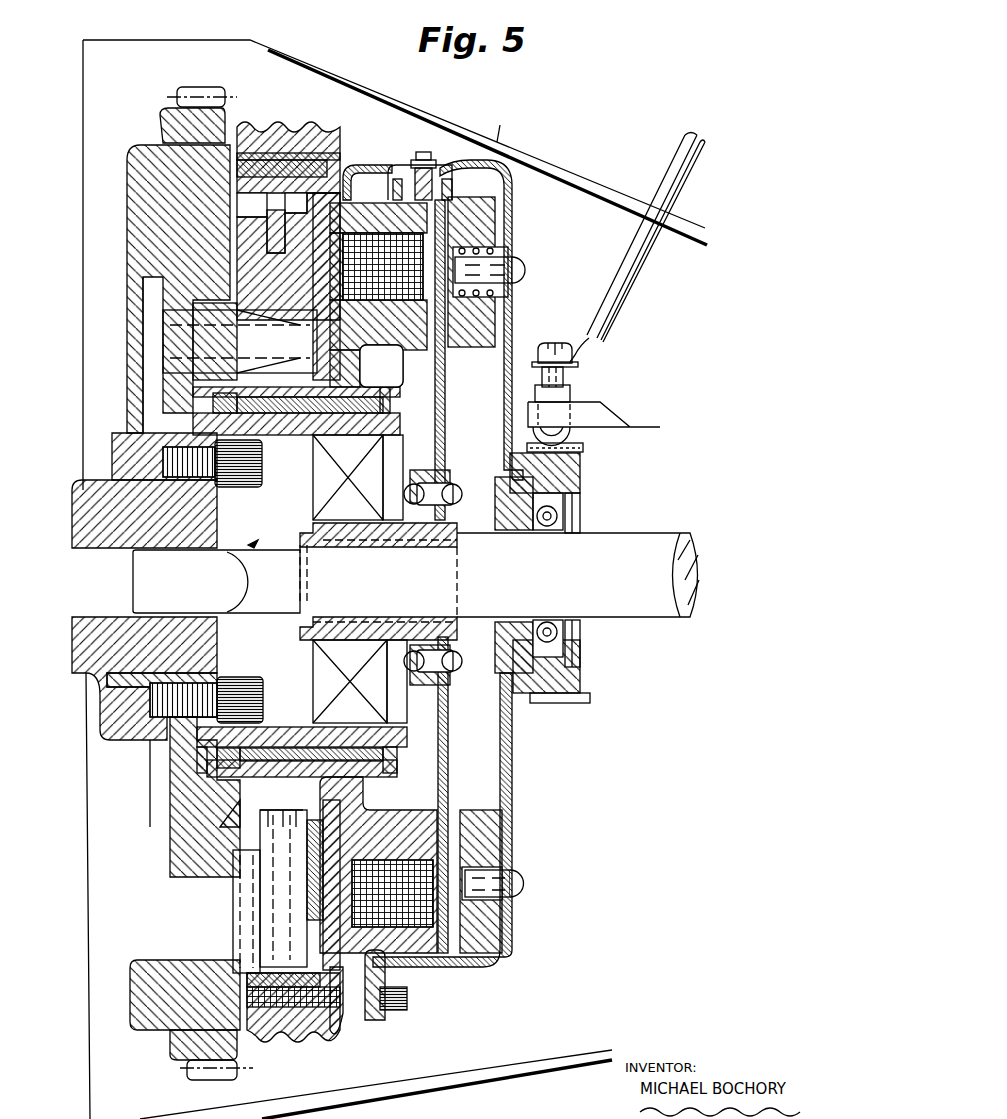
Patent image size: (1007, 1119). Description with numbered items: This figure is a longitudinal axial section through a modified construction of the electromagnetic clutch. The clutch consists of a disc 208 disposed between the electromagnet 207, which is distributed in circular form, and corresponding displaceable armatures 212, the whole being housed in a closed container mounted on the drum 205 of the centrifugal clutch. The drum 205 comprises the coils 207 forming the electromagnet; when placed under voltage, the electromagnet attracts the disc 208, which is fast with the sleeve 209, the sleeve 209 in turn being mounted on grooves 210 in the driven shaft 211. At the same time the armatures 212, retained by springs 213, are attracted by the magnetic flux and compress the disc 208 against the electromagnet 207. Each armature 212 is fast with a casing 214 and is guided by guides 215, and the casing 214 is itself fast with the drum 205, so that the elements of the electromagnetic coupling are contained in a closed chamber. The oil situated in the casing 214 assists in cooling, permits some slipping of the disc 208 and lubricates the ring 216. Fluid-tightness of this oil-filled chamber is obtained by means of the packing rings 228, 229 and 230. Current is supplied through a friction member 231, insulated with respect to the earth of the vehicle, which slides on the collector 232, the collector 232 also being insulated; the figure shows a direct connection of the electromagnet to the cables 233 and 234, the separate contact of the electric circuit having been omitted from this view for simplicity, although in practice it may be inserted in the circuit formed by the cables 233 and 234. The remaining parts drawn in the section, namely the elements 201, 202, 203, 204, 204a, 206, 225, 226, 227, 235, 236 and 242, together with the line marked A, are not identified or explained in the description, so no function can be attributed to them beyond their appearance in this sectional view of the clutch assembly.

The housing 201 is at (80, 497).
The housing cover 202 is at (147, 203).
The splined shaft 203 is at (257, 290).
The coupling ring 204 is at (250, 183).
The spline 204a is at (317, 172).
The drum 205 is at (278, 125).
The core block 206 is at (402, 425).
The electromagnet 207 is at (400, 285).
The disc 208 is at (446, 390).
The sleeve 209 is at (440, 527).
The grooves 210 is at (281, 545).
The driven shaft 211 is at (618, 545).
The armatures 212 is at (482, 227).
The springs 213 is at (482, 254).
The casing 214 is at (511, 745).
The guides 215 is at (495, 900).
The ring 216 is at (383, 390).
The lever 225 is at (682, 148).
The rod 226 is at (696, 165).
The screw 227 is at (240, 488).
The packing ring 228 is at (217, 402).
The packing ring 229 is at (387, 962).
The packing ring 230 is at (556, 642).
The friction member 231 is at (573, 392).
The collector 232 is at (585, 447).
The cable 233 is at (517, 305).
The cable 234 is at (392, 176).
The clamp 235 is at (425, 158).
The nut 236 is at (585, 356).
The coil 242 is at (373, 463).
The line A is at (501, 122).